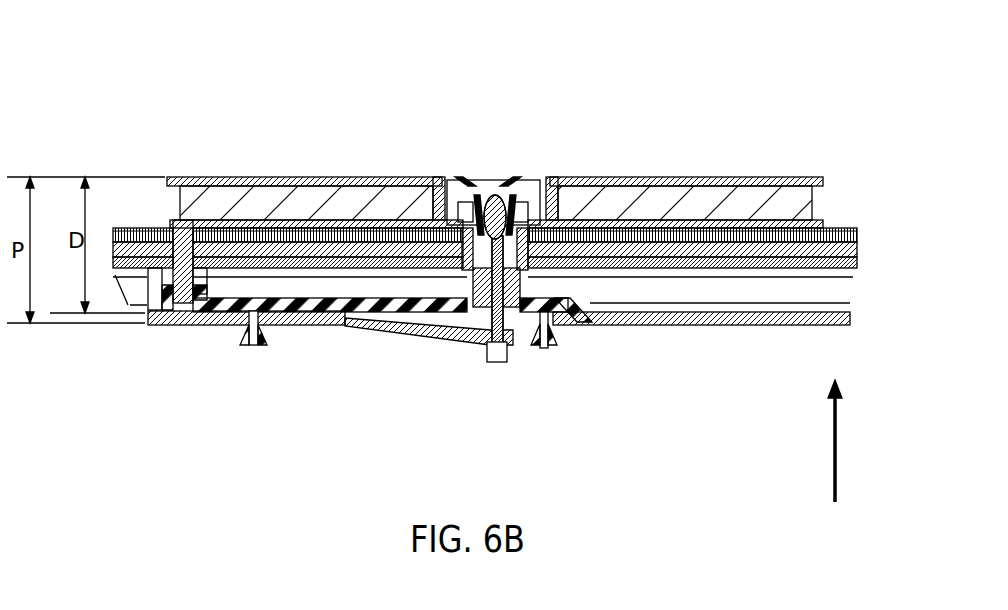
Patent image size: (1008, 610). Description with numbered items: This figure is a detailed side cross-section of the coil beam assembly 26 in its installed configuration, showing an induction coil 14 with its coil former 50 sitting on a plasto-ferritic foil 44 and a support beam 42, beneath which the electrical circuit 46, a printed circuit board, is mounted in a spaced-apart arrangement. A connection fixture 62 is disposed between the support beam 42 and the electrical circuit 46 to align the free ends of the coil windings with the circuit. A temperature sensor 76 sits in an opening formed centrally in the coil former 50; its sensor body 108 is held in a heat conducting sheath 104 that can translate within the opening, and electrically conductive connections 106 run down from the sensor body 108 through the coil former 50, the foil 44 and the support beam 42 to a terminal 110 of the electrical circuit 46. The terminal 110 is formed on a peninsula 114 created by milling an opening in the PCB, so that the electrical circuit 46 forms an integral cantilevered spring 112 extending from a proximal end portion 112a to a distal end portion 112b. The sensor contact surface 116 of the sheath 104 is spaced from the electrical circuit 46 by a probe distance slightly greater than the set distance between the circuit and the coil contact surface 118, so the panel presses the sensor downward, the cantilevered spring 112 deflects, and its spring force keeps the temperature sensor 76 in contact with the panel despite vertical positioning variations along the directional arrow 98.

The induction coil 14 is at (458, 139).
The coil beam assembly 26 is at (222, 110).
The coil contact surface 118 is at (242, 177).
The coil former 50 is at (733, 177).
The plasto-ferritic foil 44 is at (835, 240).
The support beam 42 is at (843, 265).
The electrical circuit 46 is at (710, 325).
The connection fixture 62 is at (210, 318).
The temperature sensor 76 is at (473, 162).
The heat conducting sheath 104 is at (515, 178).
The sensor body 108 is at (449, 178).
The sensor contact surface 116 is at (497, 177).
The electrically conductive connections 106 is at (478, 328).
The terminal 110 is at (510, 345).
The cantilevered spring 112 is at (490, 305).
The proximal end portion 112a is at (365, 322).
The distal end portion 112b is at (515, 335).
The peninsula 114 is at (470, 425).
The directional arrow 98 is at (838, 430).